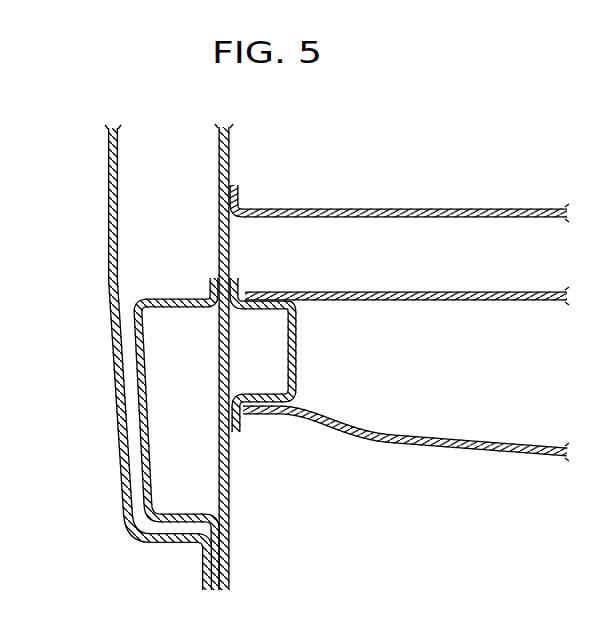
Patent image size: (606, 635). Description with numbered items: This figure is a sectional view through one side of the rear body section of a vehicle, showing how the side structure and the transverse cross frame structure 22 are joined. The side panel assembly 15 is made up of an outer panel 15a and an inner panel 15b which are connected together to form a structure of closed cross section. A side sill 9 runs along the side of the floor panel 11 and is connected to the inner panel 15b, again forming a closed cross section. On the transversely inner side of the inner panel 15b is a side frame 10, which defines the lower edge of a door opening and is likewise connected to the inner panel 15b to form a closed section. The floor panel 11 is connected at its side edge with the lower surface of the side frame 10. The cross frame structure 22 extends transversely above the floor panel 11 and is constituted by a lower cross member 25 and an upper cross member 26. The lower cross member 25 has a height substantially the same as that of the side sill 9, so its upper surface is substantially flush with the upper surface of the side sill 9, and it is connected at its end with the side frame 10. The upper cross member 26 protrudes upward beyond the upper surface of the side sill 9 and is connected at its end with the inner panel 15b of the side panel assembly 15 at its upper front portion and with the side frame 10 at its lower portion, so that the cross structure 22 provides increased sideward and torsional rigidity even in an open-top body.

The side sill 9 is at (140, 482).
The side frame 10 is at (297, 343).
The floor panel 11 is at (396, 443).
The side panel assembly 15 is at (126, 348).
The outer panel 15a is at (108, 233).
The inner panel 15b is at (231, 143).
The cross frame structure 22 is at (492, 197).
The lower cross member 25 is at (410, 302).
The upper cross member 26 is at (418, 220).